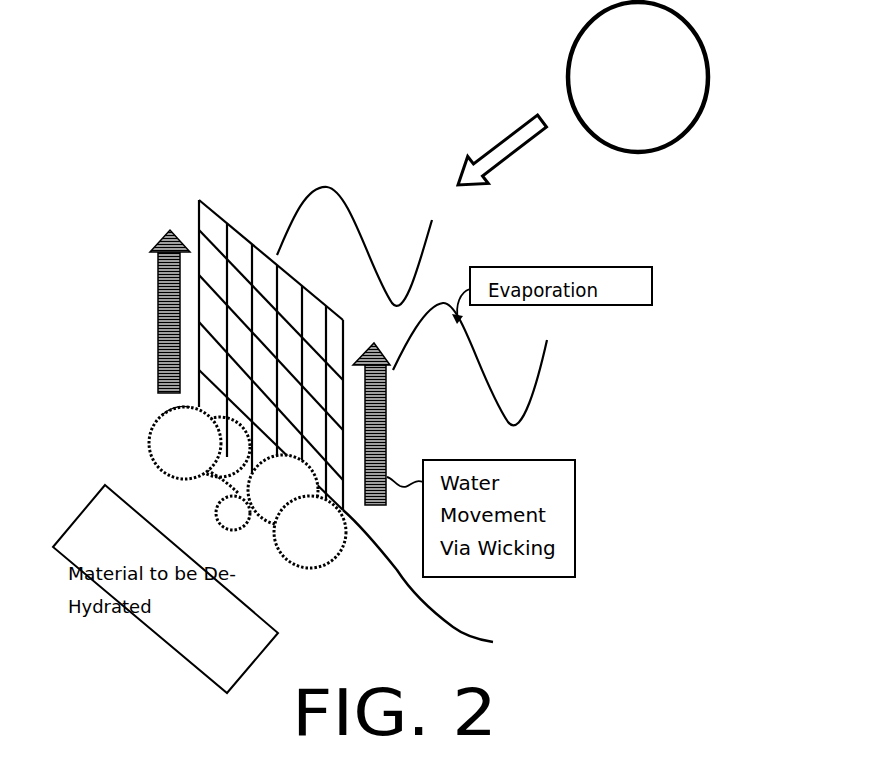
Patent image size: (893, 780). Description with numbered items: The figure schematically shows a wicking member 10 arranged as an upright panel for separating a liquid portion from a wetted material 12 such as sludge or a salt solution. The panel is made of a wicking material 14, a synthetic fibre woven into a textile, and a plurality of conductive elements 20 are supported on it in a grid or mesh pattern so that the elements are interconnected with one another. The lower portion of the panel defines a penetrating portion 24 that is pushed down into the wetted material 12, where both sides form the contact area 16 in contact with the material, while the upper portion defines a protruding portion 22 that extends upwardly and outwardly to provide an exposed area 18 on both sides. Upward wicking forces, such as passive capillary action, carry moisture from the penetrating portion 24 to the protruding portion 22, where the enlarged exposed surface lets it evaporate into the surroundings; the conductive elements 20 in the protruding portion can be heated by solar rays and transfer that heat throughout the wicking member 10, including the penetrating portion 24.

The wicking member 10 is at (246, 168).
The wetted material 12 is at (307, 555).
The wicking material 14 is at (210, 213).
The contact area 16 is at (158, 405).
The exposed area 18 is at (254, 232).
The conductive elements 20 is at (227, 323).
The protruding portion 22 is at (307, 292).
The penetrating portion 24 is at (441, 590).